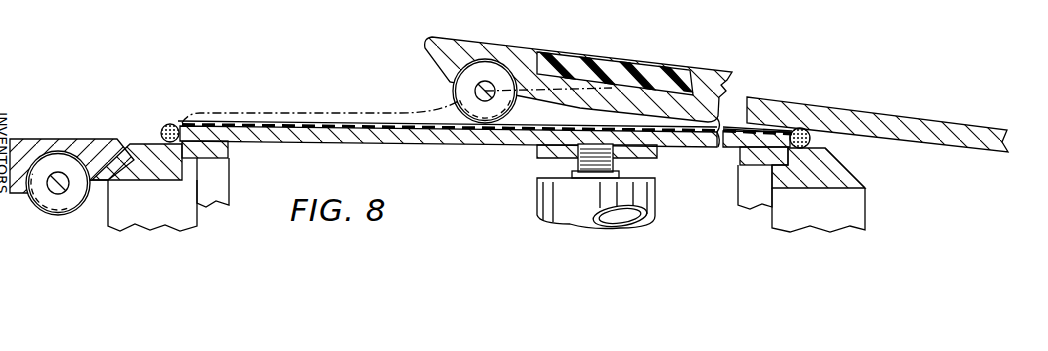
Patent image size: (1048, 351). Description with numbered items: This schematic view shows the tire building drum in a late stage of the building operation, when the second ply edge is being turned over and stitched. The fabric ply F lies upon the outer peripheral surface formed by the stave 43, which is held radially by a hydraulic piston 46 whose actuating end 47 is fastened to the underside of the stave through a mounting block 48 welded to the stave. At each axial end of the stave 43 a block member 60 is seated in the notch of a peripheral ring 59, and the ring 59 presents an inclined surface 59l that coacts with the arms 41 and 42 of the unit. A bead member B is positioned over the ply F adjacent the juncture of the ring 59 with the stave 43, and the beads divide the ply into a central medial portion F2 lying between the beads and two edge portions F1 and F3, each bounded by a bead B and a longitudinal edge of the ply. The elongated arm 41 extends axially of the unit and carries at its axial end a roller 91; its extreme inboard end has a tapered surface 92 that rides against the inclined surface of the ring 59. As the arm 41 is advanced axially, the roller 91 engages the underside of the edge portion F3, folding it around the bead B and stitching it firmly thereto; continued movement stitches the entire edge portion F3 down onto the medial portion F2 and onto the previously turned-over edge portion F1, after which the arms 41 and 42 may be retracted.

The arm 41 is at (968, 147).
The arm 42 is at (48, 138).
The stave 43 is at (413, 138).
The hydraulic piston 46 is at (650, 198).
The actuating end 47 is at (612, 161).
The mounting block 48 is at (537, 148).
The peripheral ring 59 is at (150, 140).
The inclined ledge of block 59l is at (855, 172).
The block member 60 is at (228, 148).
The roller 91 is at (455, 97).
The tapered surface 92 is at (428, 60).
The bead member B is at (160, 128).
The fabric ply F is at (367, 130).
The edge portion F1 is at (321, 120).
The medial portion F2 is at (357, 122).
The edge portion F3 is at (737, 124).